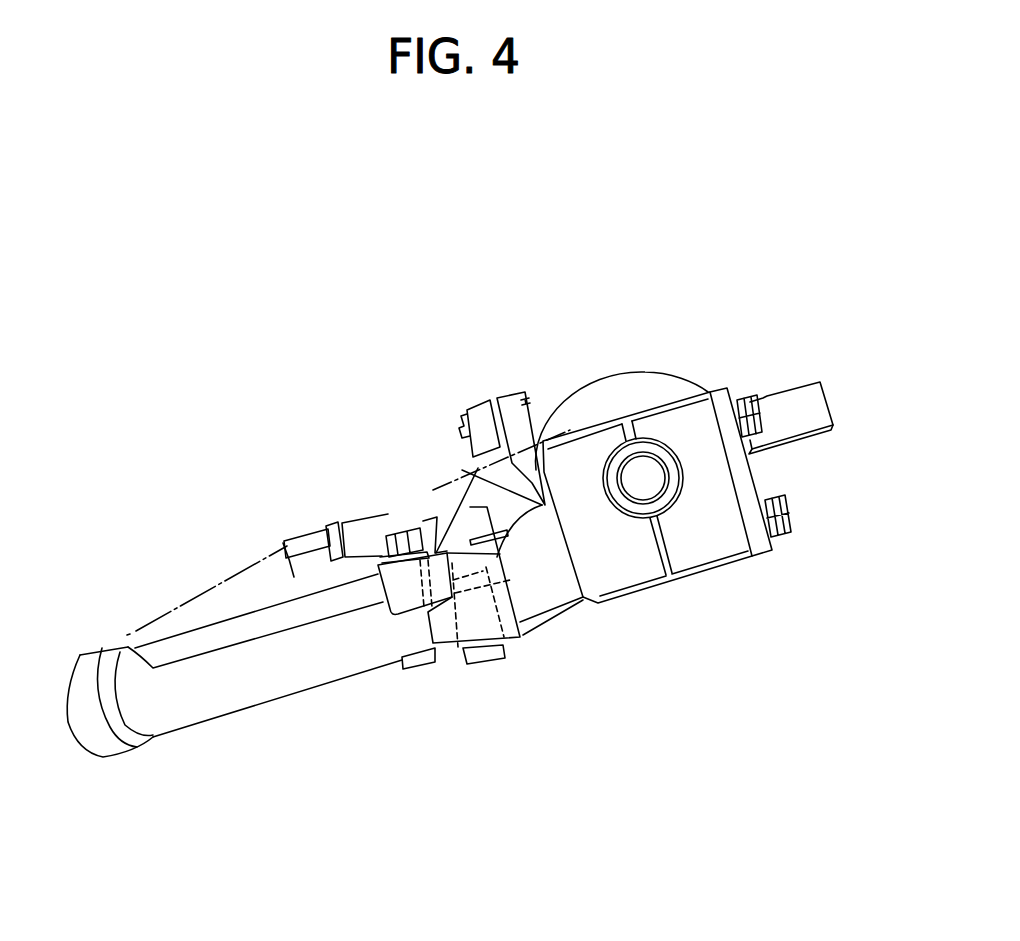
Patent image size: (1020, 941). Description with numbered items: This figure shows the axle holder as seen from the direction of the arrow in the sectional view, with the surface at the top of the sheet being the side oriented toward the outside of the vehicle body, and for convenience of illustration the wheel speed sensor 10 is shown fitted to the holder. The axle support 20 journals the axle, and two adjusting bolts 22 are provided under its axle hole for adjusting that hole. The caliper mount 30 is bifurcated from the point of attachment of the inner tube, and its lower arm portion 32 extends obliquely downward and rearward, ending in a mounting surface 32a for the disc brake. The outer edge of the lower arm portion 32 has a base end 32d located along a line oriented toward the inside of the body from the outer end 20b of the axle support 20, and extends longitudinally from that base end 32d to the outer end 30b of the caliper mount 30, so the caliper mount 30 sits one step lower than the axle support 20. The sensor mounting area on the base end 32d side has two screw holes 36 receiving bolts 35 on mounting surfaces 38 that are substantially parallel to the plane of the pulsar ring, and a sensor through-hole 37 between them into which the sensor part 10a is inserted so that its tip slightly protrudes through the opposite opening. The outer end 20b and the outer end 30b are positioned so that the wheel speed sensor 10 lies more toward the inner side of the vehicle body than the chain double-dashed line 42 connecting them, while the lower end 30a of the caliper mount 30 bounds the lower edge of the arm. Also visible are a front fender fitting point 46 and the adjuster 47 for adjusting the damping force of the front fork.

The wheel speed sensor 10 is at (476, 468).
The sensor part 10a is at (285, 545).
The axle support 20 is at (715, 550).
The outer end of the axle support 20b is at (545, 505).
The adjusting bolt 22 is at (743, 398).
The caliper mount 30 is at (385, 647).
The lower end of the caliper mount 30a is at (213, 673).
The outer end of the caliper mount 30b is at (80, 655).
The lower arm portion 32 is at (277, 683).
The mounting surface 32a is at (85, 723).
The base end of the outer edge of the lower arm portion 32d is at (487, 468).
The bolt 35 is at (398, 530).
The screw hole 36 is at (328, 520).
The sensor through-hole 37 is at (477, 668).
The mounting surface 38 is at (437, 527).
The line 42 is at (180, 603).
The front fender fitting point 46 is at (813, 405).
The adjuster 47 is at (472, 410).